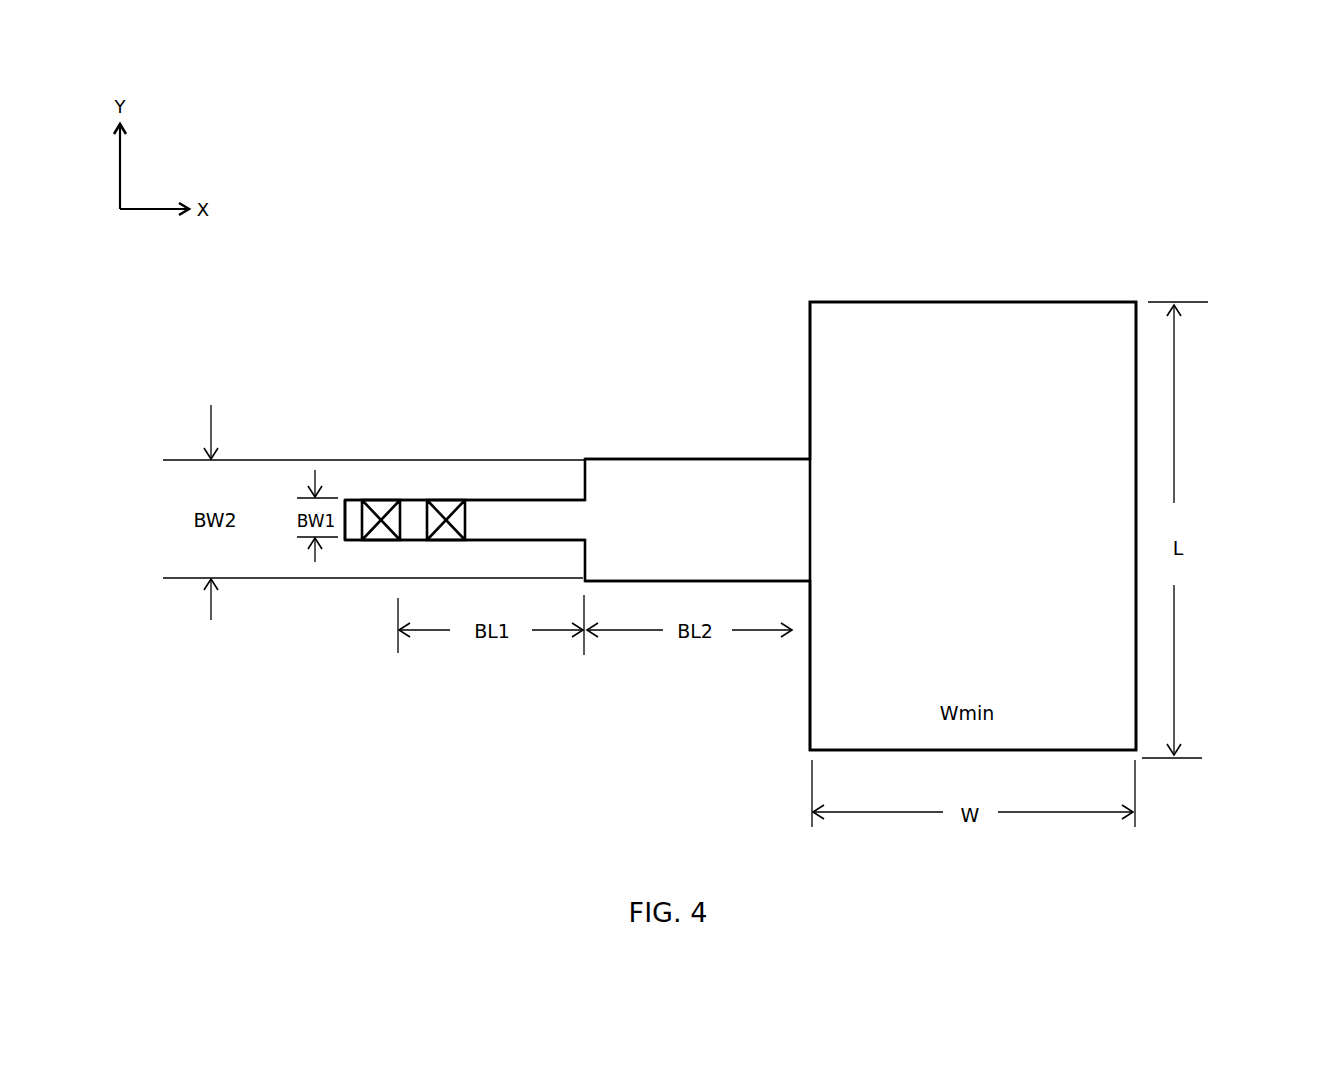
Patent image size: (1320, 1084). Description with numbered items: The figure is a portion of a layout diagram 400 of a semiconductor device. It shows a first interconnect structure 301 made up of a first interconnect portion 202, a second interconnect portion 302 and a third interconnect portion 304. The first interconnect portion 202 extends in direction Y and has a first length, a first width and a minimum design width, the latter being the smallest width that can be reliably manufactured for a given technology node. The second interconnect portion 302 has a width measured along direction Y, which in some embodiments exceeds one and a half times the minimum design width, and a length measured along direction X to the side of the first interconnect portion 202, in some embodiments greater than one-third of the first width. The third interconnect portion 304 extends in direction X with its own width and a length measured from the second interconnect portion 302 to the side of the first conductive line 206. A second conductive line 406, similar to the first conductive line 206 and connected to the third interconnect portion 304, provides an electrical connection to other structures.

The first interconnect portion 202 is at (1018, 313).
The first conductive line 206 is at (380, 505).
The first interconnect structure 301 is at (758, 301).
The second interconnect portion 302 is at (709, 479).
The third interconnect portion 304 is at (522, 510).
The layout diagram 400 is at (1266, 158).
The second conductive line 406 is at (445, 507).